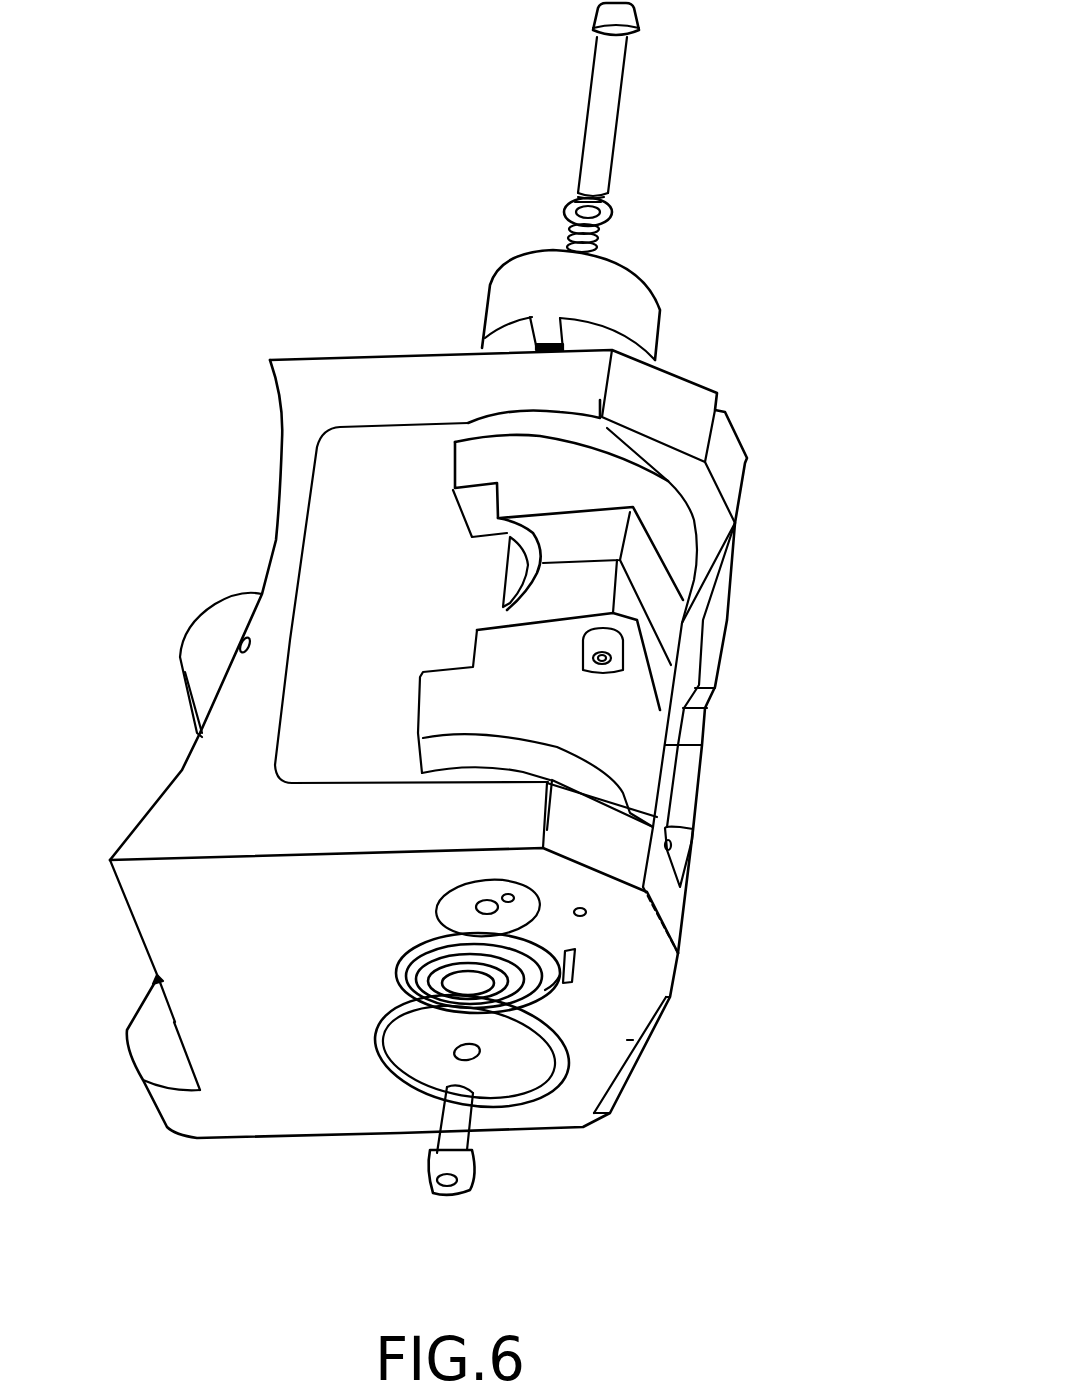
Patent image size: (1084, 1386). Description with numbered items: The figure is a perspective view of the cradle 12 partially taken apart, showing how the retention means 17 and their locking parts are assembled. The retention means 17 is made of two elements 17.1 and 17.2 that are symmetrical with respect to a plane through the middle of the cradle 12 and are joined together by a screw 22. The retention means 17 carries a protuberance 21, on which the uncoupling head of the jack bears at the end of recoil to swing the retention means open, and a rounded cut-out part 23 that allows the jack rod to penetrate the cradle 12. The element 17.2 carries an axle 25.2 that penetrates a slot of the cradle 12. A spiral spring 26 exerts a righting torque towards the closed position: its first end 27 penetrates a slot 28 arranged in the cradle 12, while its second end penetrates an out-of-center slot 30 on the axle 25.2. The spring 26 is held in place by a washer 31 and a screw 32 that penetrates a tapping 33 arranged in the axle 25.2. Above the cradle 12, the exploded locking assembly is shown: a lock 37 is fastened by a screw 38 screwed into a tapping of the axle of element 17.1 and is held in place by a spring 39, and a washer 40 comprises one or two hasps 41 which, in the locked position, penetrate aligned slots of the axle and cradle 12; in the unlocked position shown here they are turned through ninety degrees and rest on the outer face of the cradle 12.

The cradle 12 is at (790, 587).
The retention means 17 is at (440, 553).
The element of the retention means 17.1 is at (445, 487).
The element of the retention means 17.2 is at (420, 692).
The protuberance 21 is at (572, 540).
The screw 22 is at (590, 655).
The rounded cut-out part 23 is at (530, 580).
The axle 25.2 is at (462, 892).
The spiral spring 26 is at (420, 977).
The first end of the spring 27 is at (567, 978).
The slot 28 is at (586, 916).
The out-of-center slot 30 is at (511, 896).
The washer 31 is at (380, 1052).
The screw 32 is at (475, 1172).
The tapping 33 is at (480, 907).
The lock 37 is at (659, 322).
The screw 38 is at (618, 100).
The spring 39 is at (600, 236).
The washer 40 is at (612, 212).
The hasp 41 is at (540, 318).